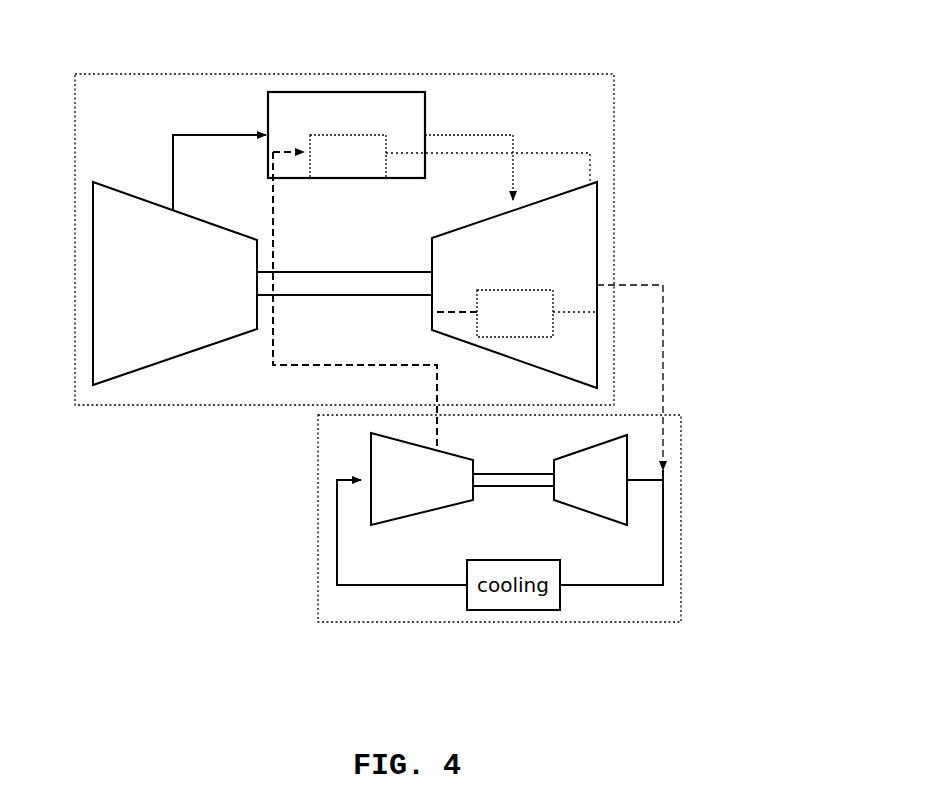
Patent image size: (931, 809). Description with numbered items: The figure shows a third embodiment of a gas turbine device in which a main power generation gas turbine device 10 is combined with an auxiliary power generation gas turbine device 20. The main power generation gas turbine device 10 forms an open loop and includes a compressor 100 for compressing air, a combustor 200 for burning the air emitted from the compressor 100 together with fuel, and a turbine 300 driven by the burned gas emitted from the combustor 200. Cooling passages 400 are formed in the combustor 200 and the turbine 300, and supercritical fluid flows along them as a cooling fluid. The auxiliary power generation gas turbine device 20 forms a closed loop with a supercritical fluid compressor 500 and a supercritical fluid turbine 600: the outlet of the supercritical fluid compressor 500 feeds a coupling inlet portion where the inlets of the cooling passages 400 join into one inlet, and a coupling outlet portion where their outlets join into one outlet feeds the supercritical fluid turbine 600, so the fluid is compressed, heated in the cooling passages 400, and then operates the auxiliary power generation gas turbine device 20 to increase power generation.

The main power generation gas turbine device 10 is at (562, 74).
The auxiliary power generation gas turbine device 20 is at (538, 518).
The compressor 100 is at (156, 210).
The combustor 200 is at (317, 92).
The turbine 300 is at (536, 215).
The cooling passage 400 is at (346, 180).
The supercritical fluid compressor 500 is at (403, 510).
The supercritical fluid turbine 600 is at (597, 507).